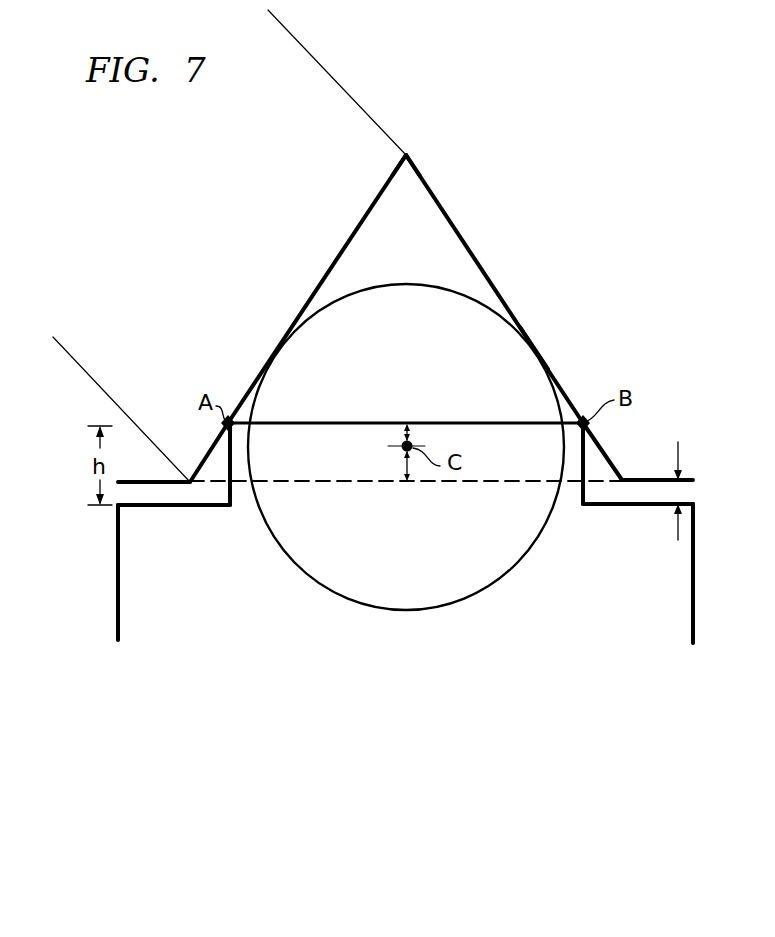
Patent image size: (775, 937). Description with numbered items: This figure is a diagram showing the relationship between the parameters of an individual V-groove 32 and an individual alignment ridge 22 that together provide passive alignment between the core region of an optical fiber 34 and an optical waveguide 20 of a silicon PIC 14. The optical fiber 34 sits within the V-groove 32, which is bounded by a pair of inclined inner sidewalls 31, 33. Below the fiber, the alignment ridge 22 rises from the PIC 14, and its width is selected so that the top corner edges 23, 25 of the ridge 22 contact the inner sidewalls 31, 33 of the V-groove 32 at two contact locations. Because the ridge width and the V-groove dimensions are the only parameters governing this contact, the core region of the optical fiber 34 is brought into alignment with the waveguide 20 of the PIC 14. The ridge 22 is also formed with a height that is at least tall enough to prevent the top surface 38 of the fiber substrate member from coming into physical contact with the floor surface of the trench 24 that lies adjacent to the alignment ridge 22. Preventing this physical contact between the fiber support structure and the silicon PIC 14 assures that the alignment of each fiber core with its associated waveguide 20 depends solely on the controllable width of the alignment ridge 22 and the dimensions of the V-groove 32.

The silicon PIC 14 is at (680, 594).
The optical waveguide 20 is at (400, 447).
The alignment ridge 22 is at (237, 460).
The top corner edge 23 is at (240, 426).
The trench 24 is at (152, 506).
The top corner edge 25 is at (578, 428).
The inner sidewall 31 is at (348, 243).
The V-groove 32 is at (410, 193).
The inner sidewall 33 is at (466, 243).
The optical fiber 34 is at (513, 362).
The top surface 38 is at (638, 480).